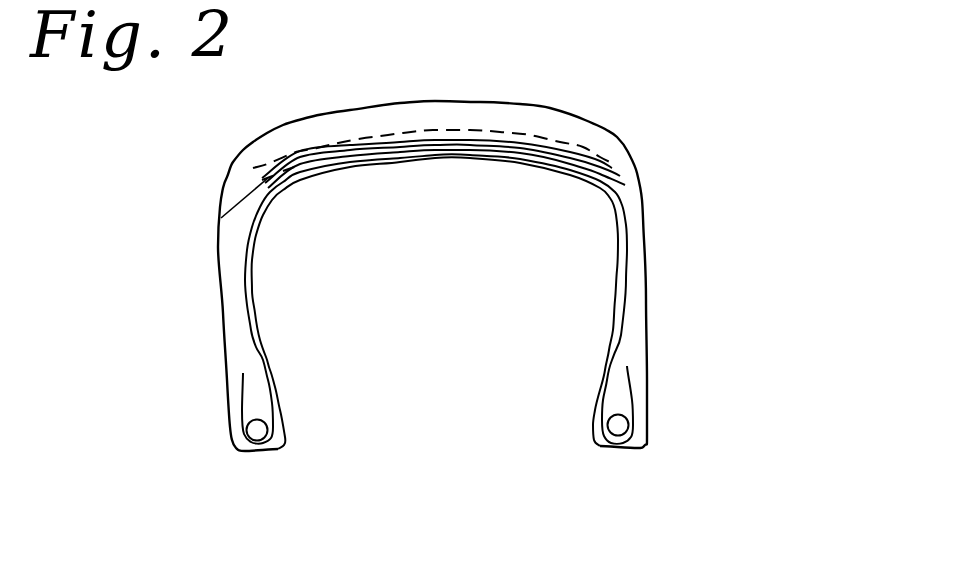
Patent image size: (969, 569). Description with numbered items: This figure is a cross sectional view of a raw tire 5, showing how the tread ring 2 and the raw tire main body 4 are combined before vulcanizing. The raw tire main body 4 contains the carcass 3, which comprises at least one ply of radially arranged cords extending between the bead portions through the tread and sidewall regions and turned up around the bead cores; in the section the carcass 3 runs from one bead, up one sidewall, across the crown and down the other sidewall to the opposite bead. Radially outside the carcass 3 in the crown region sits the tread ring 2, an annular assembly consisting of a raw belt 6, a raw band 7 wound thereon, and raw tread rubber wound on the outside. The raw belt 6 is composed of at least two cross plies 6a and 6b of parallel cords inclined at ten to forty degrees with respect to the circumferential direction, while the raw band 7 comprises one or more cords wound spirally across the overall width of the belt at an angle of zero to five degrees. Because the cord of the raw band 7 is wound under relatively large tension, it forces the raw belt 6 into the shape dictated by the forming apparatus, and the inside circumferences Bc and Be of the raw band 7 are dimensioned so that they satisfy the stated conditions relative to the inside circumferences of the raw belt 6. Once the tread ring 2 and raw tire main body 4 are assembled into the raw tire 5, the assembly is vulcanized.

The tread ring 2 is at (582, 183).
The carcass 3 is at (627, 342).
The raw tire main body 4 is at (648, 270).
The raw tire 5 is at (723, 203).
The raw belt 6 is at (747, 72).
The first belt cross ply 6a is at (606, 173).
The second belt cross ply 6b is at (592, 166).
The raw band 7 is at (565, 137).
The inside circumference of raw band Bc is at (455, 149).
The inside circumference of raw band Be is at (250, 190).